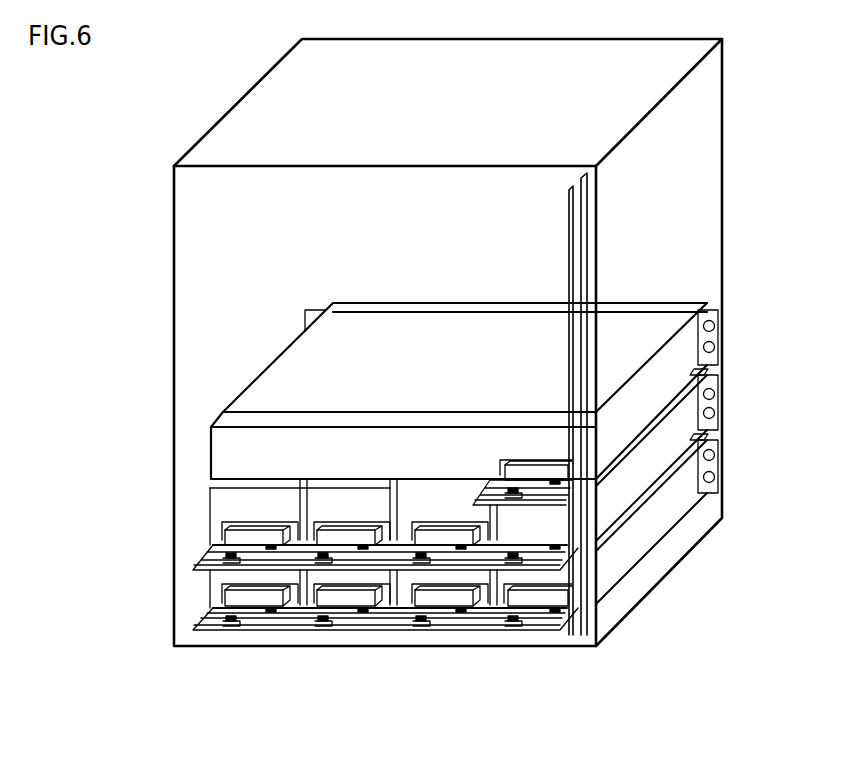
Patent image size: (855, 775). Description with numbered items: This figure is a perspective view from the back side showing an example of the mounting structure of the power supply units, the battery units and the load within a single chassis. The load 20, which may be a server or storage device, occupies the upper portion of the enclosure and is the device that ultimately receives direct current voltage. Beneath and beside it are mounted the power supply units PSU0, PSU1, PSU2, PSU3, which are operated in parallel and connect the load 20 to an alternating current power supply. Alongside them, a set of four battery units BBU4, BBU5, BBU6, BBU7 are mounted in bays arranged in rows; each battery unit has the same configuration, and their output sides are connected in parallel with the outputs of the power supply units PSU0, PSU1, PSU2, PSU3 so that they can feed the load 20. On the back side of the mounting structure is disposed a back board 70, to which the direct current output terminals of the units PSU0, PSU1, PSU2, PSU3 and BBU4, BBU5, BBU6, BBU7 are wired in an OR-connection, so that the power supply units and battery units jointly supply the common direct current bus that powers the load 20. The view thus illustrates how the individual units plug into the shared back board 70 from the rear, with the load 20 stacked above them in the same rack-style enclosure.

The load 20 is at (288, 388).
The power supply unit PSU0 is at (642, 448).
The power supply unit PSU1 is at (357, 505).
The power supply unit PSU2 is at (627, 533).
The power supply unit PSU3 is at (315, 582).
The battery unit BBU4 is at (445, 507).
The battery unit BBU5 is at (232, 506).
The battery unit BBU6 is at (448, 573).
The battery unit BBU7 is at (223, 577).
The back board 70 is at (538, 505).